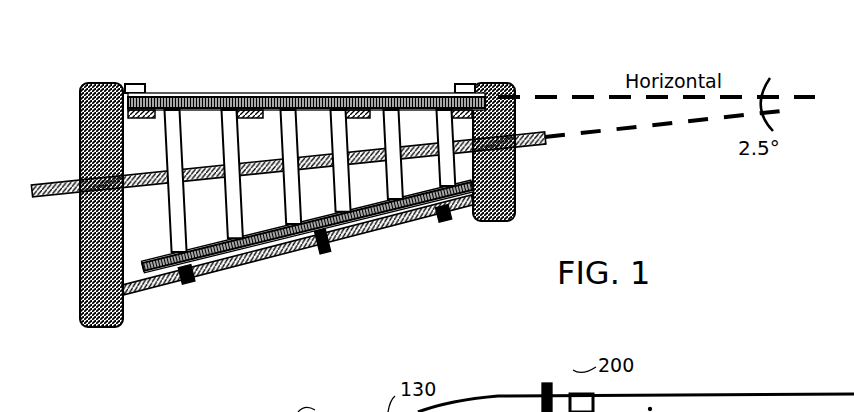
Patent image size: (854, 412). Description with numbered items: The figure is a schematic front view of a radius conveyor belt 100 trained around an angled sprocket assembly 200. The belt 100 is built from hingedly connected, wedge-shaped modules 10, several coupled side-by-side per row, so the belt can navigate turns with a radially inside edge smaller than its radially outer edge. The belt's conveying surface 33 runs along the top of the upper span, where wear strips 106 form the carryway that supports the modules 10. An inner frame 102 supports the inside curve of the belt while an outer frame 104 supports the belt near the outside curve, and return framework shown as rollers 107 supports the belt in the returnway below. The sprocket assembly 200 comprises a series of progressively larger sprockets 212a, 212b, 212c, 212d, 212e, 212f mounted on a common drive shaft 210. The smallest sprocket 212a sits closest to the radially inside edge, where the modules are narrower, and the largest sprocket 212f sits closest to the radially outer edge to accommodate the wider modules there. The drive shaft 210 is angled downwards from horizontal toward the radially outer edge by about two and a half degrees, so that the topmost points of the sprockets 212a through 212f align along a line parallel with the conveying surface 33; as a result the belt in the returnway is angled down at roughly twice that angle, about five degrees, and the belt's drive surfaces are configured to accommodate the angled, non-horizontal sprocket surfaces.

The module 10 is at (201, 93).
The conveying surface 33 is at (372, 96).
The radius conveyor belt 100 is at (306, 77).
The inner frame 102 is at (518, 208).
The outer frame 104 is at (80, 291).
The wear strips 106 is at (137, 115).
The rollers 107 is at (188, 284).
The sprocket assembly 200 is at (530, 156).
The drive shaft 210 is at (44, 185).
The sprocket 212a is at (438, 117).
The sprocket 212b is at (398, 226).
The sprocket 212c is at (350, 246).
The sprocket 212d is at (298, 93).
The sprocket 212e is at (228, 112).
The sprocket 212f is at (173, 230).